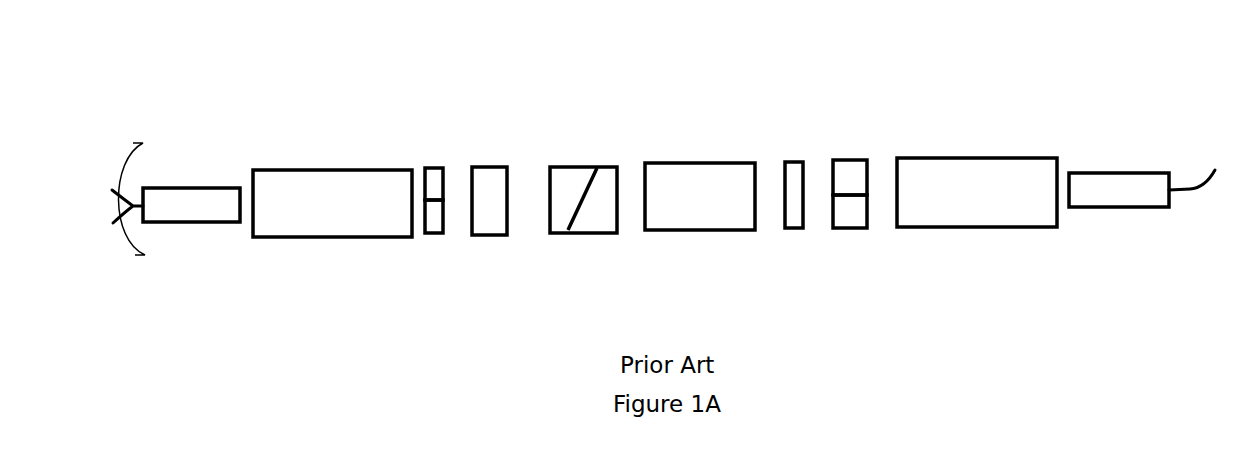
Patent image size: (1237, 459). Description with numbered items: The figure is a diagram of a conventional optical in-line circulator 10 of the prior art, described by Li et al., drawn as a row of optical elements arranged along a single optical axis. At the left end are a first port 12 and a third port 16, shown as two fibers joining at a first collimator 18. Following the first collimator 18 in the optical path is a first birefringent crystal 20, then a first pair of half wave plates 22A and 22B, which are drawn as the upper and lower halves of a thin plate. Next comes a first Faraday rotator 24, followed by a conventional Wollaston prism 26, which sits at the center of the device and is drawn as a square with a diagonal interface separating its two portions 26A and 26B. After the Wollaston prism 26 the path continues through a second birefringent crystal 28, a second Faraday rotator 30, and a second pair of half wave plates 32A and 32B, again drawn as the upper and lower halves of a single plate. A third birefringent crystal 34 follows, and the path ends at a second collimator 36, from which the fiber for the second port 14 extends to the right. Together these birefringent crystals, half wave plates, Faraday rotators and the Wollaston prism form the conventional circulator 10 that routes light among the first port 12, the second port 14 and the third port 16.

The conventional optical in-line circulator 10 is at (672, 41).
The first port 12 is at (152, 192).
The second port 14 is at (1183, 190).
The third port 16 is at (152, 227).
The first collimator 18 is at (155, 192).
The first birefringent crystal 20 is at (332, 168).
The half wave plate 22A is at (440, 235).
The half wave plate 22B is at (440, 168).
The first Faraday rotator 24 is at (507, 198).
The conventional Wollaston prism 26 is at (599, 159).
The Wollaston prism element 26A is at (583, 232).
The Wollaston prism element 26B is at (567, 165).
The second birefringent crystal 28 is at (675, 163).
The second Faraday rotator 30 is at (803, 228).
The half wave plate 32A is at (850, 228).
The half wave plate 32B is at (848, 160).
The third birefringent crystal 34 is at (930, 158).
The second collimator 36 is at (1080, 170).